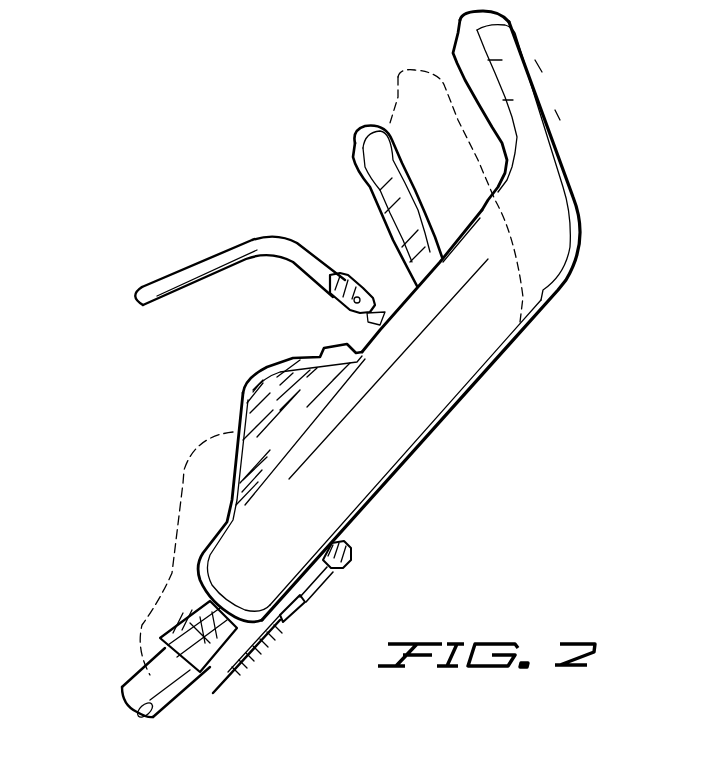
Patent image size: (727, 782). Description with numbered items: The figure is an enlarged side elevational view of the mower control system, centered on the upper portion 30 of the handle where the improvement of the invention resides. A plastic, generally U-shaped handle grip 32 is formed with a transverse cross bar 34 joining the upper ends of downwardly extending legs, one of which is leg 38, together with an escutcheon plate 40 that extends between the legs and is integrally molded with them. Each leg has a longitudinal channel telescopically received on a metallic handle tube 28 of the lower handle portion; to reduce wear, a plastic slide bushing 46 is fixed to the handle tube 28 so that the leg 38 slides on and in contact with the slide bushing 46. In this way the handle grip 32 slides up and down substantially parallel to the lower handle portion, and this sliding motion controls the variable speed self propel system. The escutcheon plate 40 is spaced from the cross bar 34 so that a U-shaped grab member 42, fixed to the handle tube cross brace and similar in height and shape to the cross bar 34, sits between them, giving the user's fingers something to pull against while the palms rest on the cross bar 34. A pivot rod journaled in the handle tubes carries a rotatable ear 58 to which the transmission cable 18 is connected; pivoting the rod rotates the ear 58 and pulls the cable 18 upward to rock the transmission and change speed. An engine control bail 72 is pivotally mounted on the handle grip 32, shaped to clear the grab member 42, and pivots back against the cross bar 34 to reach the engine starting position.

The cable 18 is at (268, 647).
The handle tube 28 is at (130, 678).
The upper portion 30 is at (500, 362).
The handle grip 32 is at (557, 139).
The transverse cross bar 34 is at (398, 75).
The leg 38 is at (413, 417).
The escutcheon plate 40 is at (243, 393).
The grab member 42 is at (355, 132).
The slide bushing 46 is at (193, 632).
The ear 58 is at (350, 553).
The engine control bail 72 is at (150, 290).